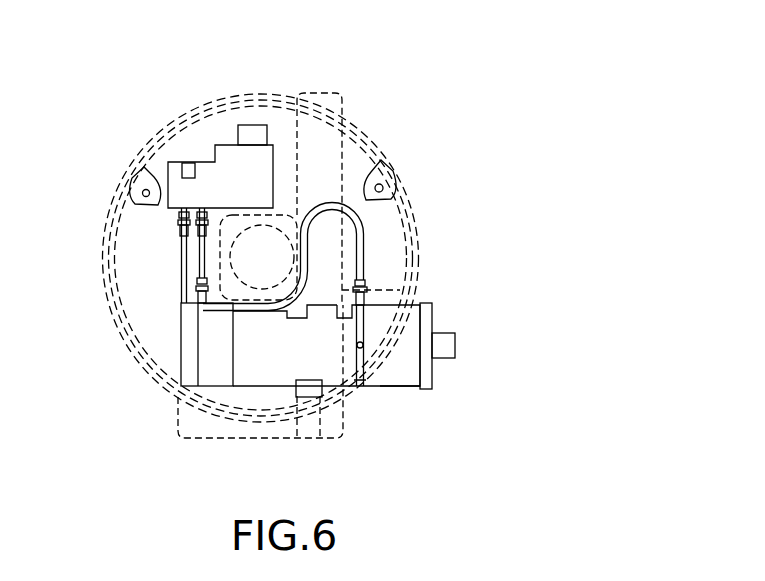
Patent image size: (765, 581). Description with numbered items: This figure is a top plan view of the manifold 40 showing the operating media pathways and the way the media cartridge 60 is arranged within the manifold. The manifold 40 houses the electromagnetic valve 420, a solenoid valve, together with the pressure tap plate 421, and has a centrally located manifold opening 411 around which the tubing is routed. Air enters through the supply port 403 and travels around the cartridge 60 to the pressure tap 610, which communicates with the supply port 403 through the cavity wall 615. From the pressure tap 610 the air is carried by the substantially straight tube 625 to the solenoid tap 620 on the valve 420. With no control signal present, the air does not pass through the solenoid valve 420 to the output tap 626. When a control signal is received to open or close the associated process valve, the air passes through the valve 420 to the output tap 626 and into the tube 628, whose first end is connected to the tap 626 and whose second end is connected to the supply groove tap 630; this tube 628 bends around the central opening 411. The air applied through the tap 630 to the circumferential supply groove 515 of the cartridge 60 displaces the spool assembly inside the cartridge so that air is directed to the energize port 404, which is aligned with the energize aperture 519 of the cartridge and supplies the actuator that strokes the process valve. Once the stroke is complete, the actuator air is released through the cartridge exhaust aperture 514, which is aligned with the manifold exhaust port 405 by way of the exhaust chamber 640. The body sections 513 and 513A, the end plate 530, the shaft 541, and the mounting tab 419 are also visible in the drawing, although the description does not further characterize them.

The manifold 40 is at (170, 88).
The manifold exhaust port 405 is at (330, 88).
The exhaust chamber 640 is at (322, 146).
The energize port 404 is at (292, 448).
The supply port 403 is at (200, 446).
The mounting tab 419 is at (408, 187).
The output tap 626 is at (150, 190).
The electromagnetic valve 420 is at (220, 166).
The pressure tap plate 421 is at (177, 227).
The solenoid tap 620 is at (210, 212).
The tube 625 is at (178, 247).
The pressure tap 610 is at (197, 305).
The cavity wall 615 is at (180, 296).
The tube 628 is at (178, 265).
The supply groove tap 630 is at (366, 282).
The manifold opening 411 is at (258, 257).
The end cap 513A is at (210, 367).
The body section 513 is at (285, 313).
The cartridge exhaust aperture 514 is at (308, 318).
The circumferential supply groove 515 is at (368, 390).
The media cartridge 60 is at (398, 395).
The end plate 530 is at (428, 388).
The shaft 541 is at (456, 342).
The energize aperture 519 is at (300, 392).